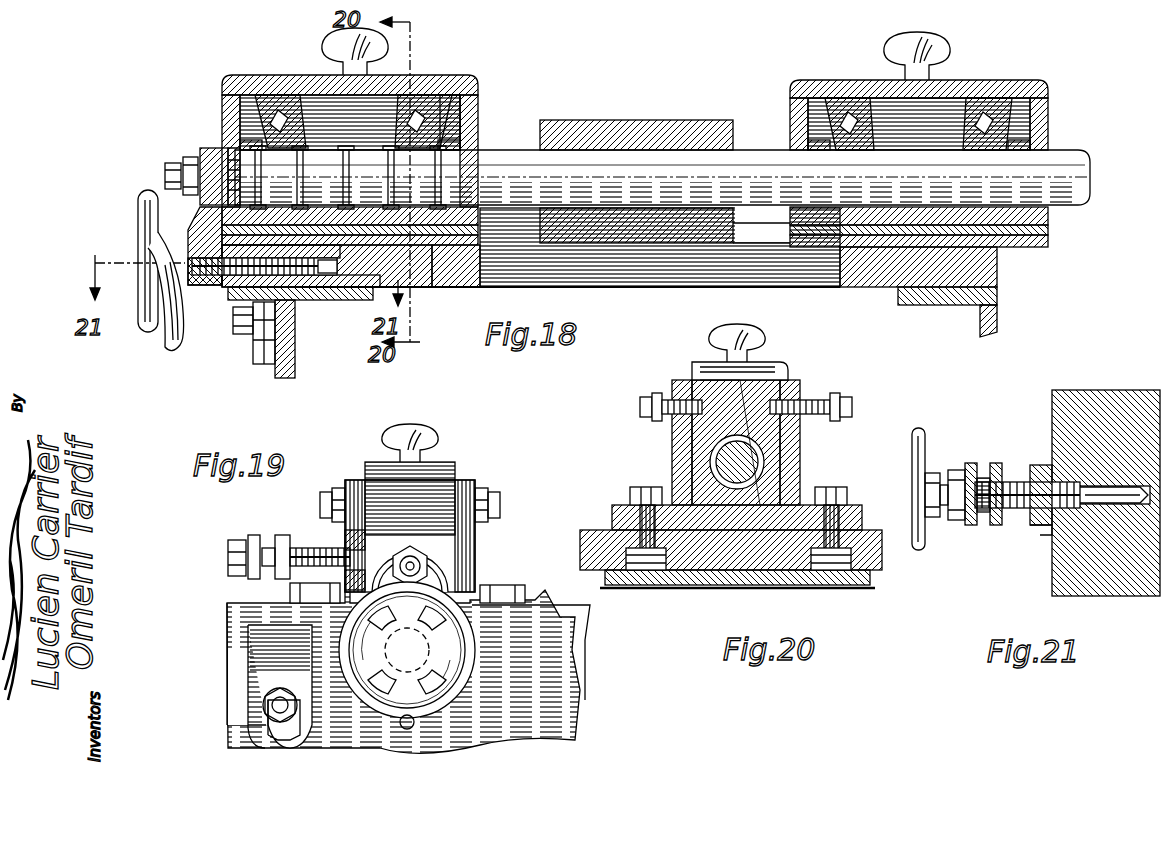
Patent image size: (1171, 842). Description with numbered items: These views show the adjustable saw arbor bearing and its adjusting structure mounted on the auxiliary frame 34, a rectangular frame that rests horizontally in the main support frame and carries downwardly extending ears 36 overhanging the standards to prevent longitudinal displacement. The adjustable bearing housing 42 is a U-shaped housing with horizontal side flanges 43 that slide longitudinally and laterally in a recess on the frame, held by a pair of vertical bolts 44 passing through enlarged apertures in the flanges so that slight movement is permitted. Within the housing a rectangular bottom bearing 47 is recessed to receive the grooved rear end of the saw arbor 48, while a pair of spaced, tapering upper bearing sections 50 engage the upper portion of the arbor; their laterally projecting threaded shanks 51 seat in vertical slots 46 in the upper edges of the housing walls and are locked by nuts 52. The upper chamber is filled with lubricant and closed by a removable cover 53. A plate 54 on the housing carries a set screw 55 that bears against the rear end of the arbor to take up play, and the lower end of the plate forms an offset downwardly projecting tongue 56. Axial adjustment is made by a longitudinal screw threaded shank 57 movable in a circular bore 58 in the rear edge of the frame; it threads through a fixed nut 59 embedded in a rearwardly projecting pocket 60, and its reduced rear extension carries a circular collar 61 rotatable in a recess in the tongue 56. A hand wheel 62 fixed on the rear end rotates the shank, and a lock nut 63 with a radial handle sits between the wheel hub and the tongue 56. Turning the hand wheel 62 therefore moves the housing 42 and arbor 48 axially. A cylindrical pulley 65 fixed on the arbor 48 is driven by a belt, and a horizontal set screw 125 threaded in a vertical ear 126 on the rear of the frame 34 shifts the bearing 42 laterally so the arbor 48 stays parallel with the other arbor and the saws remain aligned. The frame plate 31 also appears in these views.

In FIG. 18, the frame plate 31 is at (298, 333).
In FIG. 19, the frame plate 31 is at (538, 703).
In FIG. 18, the auxiliary frame 34 is at (646, 265).
In FIG. 19, the auxiliary frame 34 is at (580, 652).
In FIG. 20, the auxiliary frame 34 is at (753, 550).
In FIG. 21, the auxiliary frame 34 is at (1113, 577).
In FIG. 18, the ears 36 is at (265, 364).
In FIG. 19, the ears 36 is at (275, 670).
In FIG. 18, the bearing housing 42 is at (226, 105).
In FIG. 19, the bearing housing 42 is at (466, 562).
In FIG. 20, the bearing housing 42 is at (800, 468).
In FIG. 18, the side flanges 43 is at (478, 118).
In FIG. 19, the side flanges 43 is at (503, 627).
In FIG. 20, the side flanges 43 is at (612, 512).
In FIG. 20, the vertical bolts 44 is at (645, 545).
In FIG. 20, the vertical slots 46 is at (793, 385).
In FIG. 18, the bottom bearings 47 is at (1048, 222).
In FIG. 20, the bottom bearings 47 is at (690, 482).
In FIG. 18, the saw arbor 48 is at (747, 165).
In FIG. 20, the saw arbor 48 is at (710, 458).
In FIG. 18, the upper bearing sections 50 is at (265, 150).
In FIG. 20, the upper bearing sections 50 is at (717, 430).
In FIG. 19, the threaded shanks 51 is at (495, 497).
In FIG. 20, the threaded shanks 51 is at (668, 398).
In FIG. 19, the nuts 52 is at (333, 492).
In FIG. 20, the nuts 52 is at (820, 408).
In FIG. 18, the removable cover 53 is at (445, 84).
In FIG. 19, the removable cover 53 is at (418, 472).
In FIG. 20, the removable cover 53 is at (700, 365).
In FIG. 18, the plate 54 is at (212, 147).
In FIG. 18, the set screw 55 is at (170, 163).
In FIG. 18, the tongue 56 is at (190, 228).
In FIG. 21, the tongue 56 is at (971, 465).
In FIG. 18, the screw threaded shank 57 is at (237, 287).
In FIG. 21, the screw threaded shank 57 is at (996, 527).
In FIG. 21, the circular bore 58 is at (1107, 487).
In FIG. 21, the fixed nut 59 is at (1040, 527).
In FIG. 21, the pocket 60 is at (1033, 465).
In FIG. 18, the circular collar 61 is at (202, 287).
In FIG. 18, the hand wheel 62 is at (143, 218).
In FIG. 21, the hand wheel 62 is at (918, 432).
In FIG. 18, the lock nut 63 is at (163, 338).
In FIG. 21, the lock nut 63 is at (957, 520).
In FIG. 18, the cylindrical pulleys 65 is at (614, 127).
In FIG. 19, the horizontal set screw 125 is at (303, 548).
In FIG. 19, the vertical ear 126 is at (259, 545).